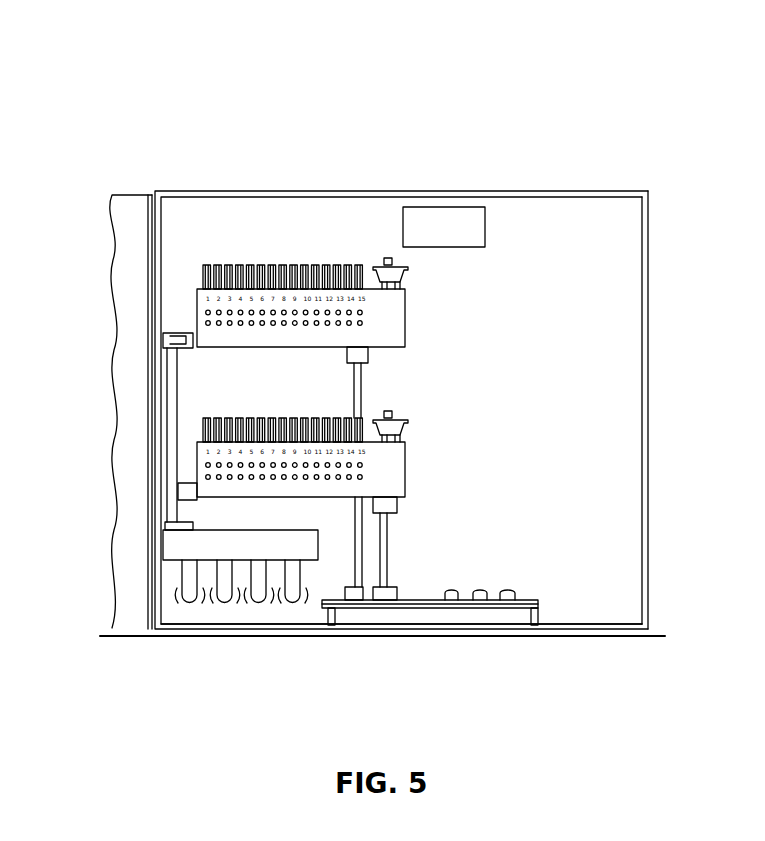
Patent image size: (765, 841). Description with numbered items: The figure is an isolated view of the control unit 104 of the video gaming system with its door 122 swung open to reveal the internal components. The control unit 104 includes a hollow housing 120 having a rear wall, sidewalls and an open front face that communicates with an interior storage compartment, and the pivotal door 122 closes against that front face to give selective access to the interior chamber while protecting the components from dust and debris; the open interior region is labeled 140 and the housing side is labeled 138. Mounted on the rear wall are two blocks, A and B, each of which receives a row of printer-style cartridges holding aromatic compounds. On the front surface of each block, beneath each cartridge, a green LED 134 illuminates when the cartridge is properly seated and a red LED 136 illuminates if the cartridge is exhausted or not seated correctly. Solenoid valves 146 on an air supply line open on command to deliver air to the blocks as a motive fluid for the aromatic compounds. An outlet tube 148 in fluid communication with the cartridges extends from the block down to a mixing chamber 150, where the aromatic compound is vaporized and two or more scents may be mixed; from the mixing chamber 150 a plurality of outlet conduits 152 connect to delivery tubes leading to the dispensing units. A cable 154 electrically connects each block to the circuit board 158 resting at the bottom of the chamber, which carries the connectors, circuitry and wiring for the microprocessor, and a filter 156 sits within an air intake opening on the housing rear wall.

The control unit 104 is at (136, 51).
The hollow housing 120 is at (305, 191).
The door 122 is at (112, 225).
The green LED 134 is at (200, 316).
The red LED 136 is at (200, 323).
The housing side wall 138 is at (642, 389).
The interior chamber 140 is at (401, 386).
The solenoid valve 146 is at (384, 258).
The outlet tube 148 is at (172, 440).
The mixing chamber 150 is at (163, 548).
The outlet conduit 152 is at (190, 610).
The cable 154 is at (378, 566).
The filter 156 is at (432, 207).
The circuit board 158 is at (515, 637).